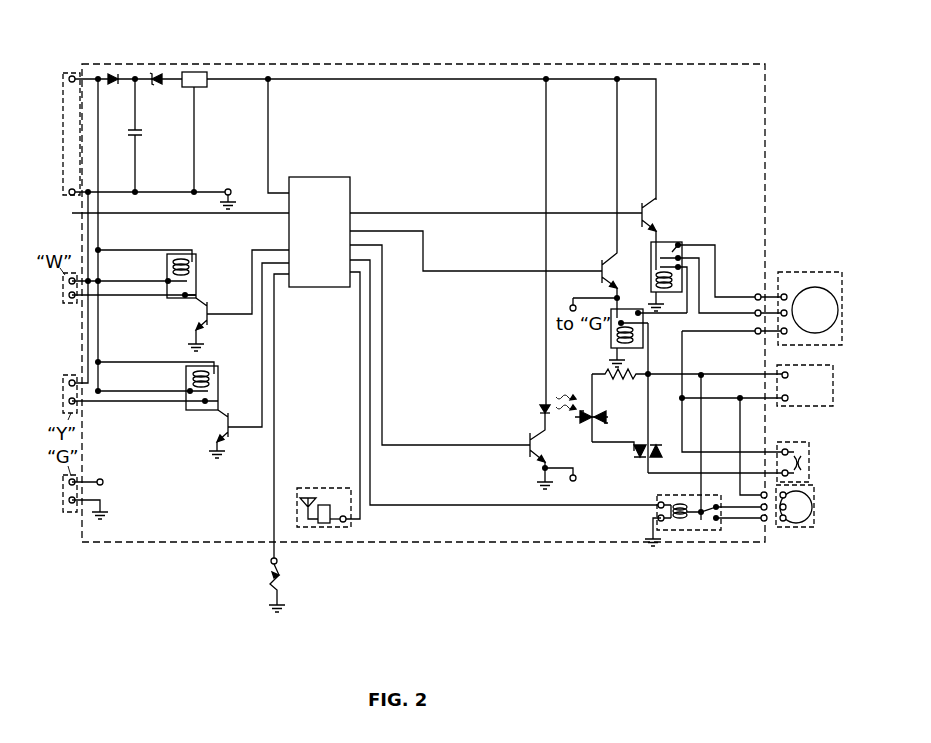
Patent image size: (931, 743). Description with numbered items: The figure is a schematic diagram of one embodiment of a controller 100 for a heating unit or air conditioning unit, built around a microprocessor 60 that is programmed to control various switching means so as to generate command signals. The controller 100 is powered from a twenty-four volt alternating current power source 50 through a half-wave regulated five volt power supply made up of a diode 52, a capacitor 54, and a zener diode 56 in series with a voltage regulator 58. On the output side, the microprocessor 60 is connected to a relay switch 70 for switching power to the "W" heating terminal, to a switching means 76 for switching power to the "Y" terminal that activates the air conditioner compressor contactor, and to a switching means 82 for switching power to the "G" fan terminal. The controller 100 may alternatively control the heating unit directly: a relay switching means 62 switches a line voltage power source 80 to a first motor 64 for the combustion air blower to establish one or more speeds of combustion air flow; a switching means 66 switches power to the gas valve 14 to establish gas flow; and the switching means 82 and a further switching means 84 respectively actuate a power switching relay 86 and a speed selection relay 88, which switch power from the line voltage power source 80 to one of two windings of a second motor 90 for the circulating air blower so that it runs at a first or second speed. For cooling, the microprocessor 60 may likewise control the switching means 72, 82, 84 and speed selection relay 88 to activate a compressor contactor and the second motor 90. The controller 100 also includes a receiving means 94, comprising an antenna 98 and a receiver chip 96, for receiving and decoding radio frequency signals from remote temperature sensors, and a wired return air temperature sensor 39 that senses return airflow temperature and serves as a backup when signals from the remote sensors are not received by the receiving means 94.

The controller 100 is at (287, 62).
The 24 volt alternating current power source 50 is at (64, 148).
The diode 52 is at (111, 74).
The capacitor 54 is at (134, 128).
The zener diode 56 is at (158, 74).
The voltage regulator 58 is at (200, 72).
The microprocessor 60 is at (297, 177).
The relay switch 70 is at (207, 319).
The switching means 76 is at (193, 366).
The switching means 72 is at (217, 415).
The wired return air temperature sensor 39 is at (270, 577).
The receiving means 94 is at (339, 532).
The receiver chip 96 is at (331, 524).
The antenna 98 is at (304, 522).
The switching means 66 is at (527, 452).
The power switching relay 86 is at (610, 343).
The switching means 82 is at (605, 258).
The switching means 84 is at (652, 226).
The speed selection relay 88 is at (681, 243).
The second motor 90 is at (812, 287).
The line voltage power source 80 is at (823, 408).
The gas valve 14 is at (810, 470).
The relay switching means 62 is at (700, 531).
The first motor 64 is at (800, 526).